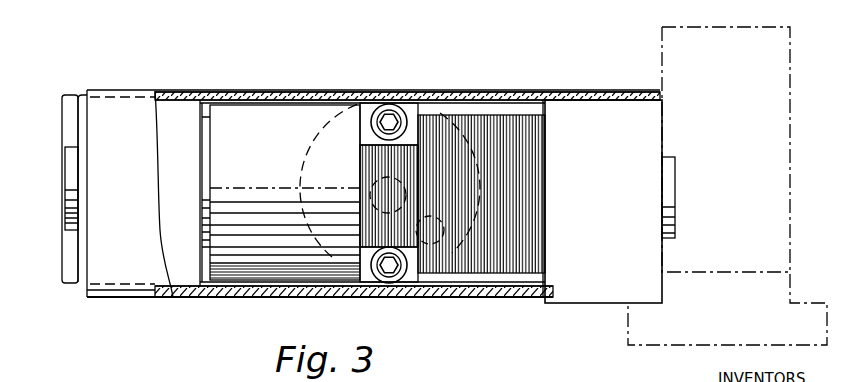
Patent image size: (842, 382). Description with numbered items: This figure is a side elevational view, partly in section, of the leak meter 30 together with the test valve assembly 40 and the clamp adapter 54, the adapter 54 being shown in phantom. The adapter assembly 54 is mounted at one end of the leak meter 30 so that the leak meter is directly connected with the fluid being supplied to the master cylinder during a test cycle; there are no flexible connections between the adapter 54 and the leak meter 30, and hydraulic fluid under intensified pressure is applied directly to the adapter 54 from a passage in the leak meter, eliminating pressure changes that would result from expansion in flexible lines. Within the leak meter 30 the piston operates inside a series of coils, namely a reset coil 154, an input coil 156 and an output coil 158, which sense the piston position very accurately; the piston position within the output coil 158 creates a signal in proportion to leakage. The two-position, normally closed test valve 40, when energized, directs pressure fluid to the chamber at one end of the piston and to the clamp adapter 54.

The leak meter 30 is at (477, 91).
The test valve 40 is at (333, 122).
The clamp adapter 54 is at (733, 125).
The reset coil 154 is at (275, 252).
The input coil 156 is at (405, 246).
The output coil 158 is at (490, 260).